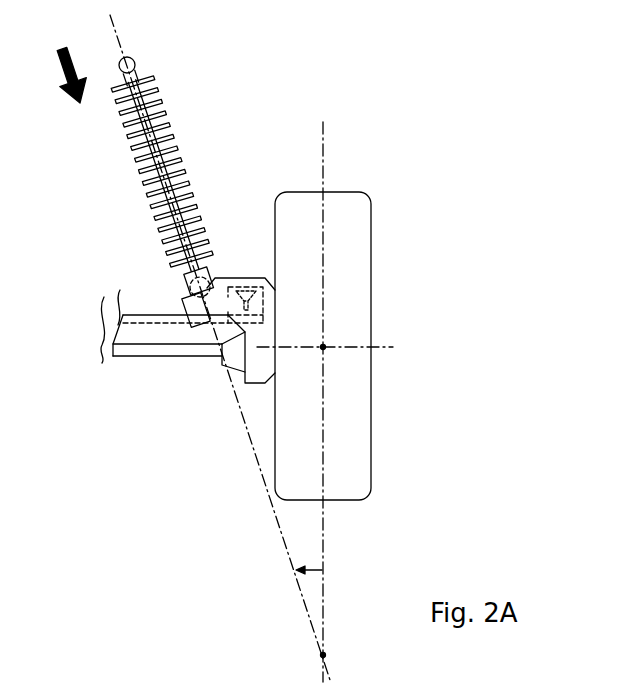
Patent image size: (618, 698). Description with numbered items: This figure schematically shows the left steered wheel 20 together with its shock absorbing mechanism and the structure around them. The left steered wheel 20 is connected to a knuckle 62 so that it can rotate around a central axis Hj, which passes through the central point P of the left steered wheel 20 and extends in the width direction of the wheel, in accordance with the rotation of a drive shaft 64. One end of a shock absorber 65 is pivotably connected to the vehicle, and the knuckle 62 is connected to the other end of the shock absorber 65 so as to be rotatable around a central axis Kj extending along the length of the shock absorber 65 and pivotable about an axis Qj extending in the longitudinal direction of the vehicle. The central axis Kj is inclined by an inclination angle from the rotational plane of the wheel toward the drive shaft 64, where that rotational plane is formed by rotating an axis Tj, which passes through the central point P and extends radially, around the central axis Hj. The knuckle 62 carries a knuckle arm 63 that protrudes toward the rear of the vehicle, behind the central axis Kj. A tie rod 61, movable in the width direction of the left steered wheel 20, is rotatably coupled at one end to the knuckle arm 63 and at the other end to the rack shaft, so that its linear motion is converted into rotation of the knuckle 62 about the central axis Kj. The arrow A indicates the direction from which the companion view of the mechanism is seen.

The left steered wheel 20 is at (363, 470).
The tie rod 61 is at (137, 306).
The knuckle 62 is at (237, 278).
The knuckle arm 63 is at (263, 284).
The drive shaft 64 is at (157, 357).
The shock absorber 65 is at (152, 78).
The central axis of the shock absorber Kj is at (113, 19).
The axis Tj is at (325, 139).
The central axis of the left steered wheel Hj is at (393, 347).
The axis Qj is at (186, 290).
The central point of the left steered wheel P is at (325, 346).
The arrow A is at (67, 58).